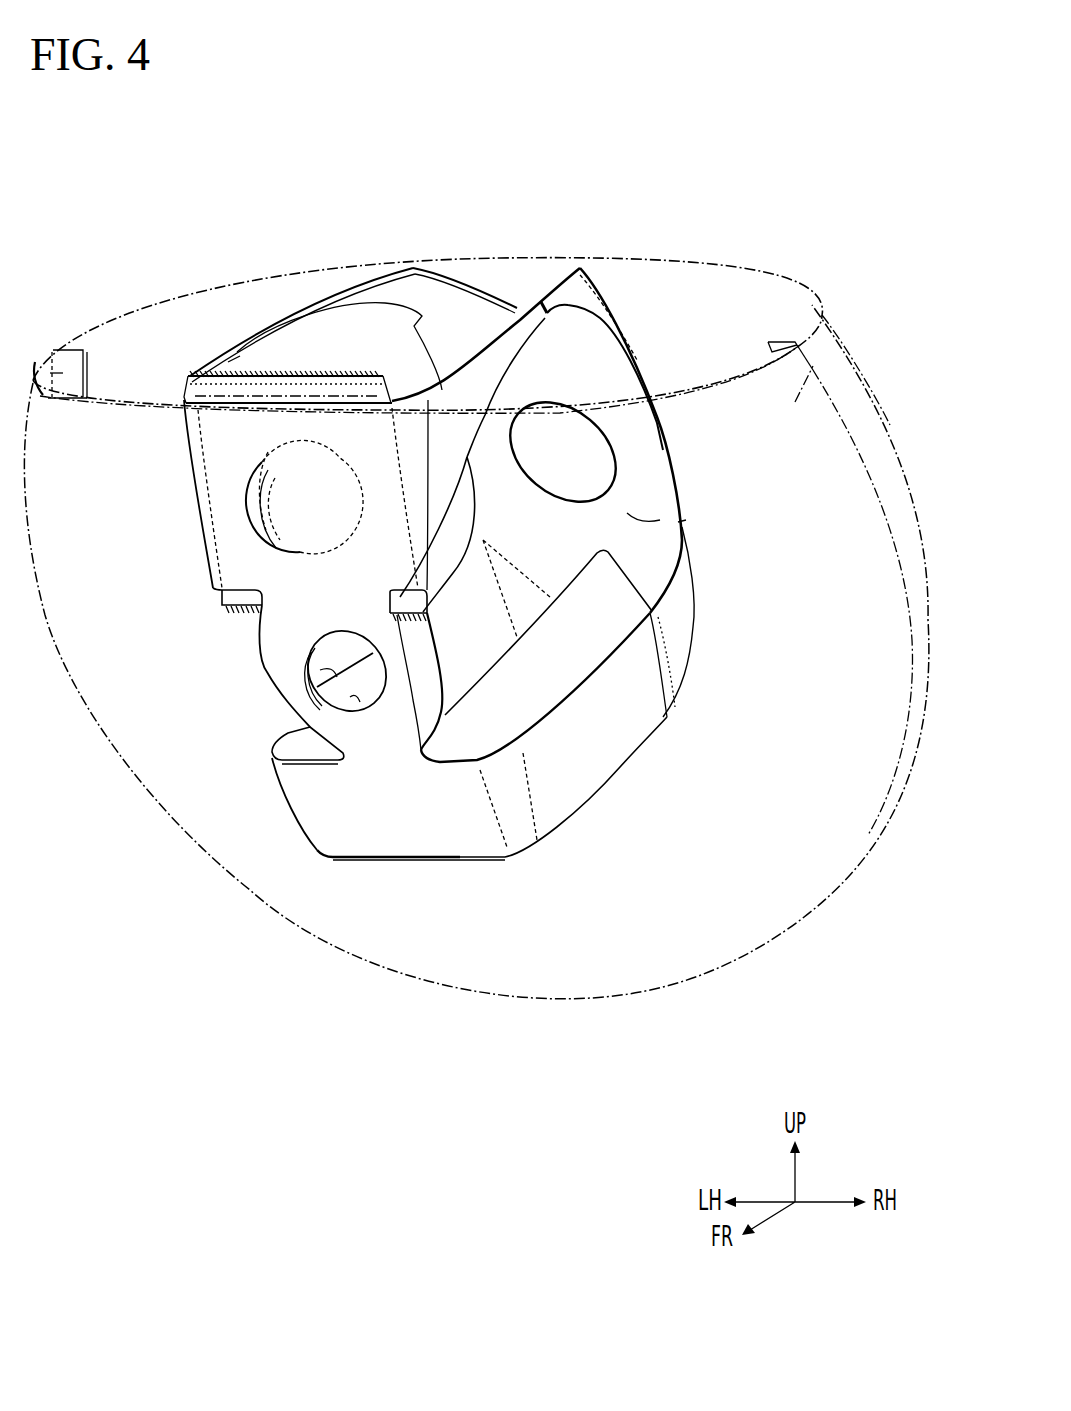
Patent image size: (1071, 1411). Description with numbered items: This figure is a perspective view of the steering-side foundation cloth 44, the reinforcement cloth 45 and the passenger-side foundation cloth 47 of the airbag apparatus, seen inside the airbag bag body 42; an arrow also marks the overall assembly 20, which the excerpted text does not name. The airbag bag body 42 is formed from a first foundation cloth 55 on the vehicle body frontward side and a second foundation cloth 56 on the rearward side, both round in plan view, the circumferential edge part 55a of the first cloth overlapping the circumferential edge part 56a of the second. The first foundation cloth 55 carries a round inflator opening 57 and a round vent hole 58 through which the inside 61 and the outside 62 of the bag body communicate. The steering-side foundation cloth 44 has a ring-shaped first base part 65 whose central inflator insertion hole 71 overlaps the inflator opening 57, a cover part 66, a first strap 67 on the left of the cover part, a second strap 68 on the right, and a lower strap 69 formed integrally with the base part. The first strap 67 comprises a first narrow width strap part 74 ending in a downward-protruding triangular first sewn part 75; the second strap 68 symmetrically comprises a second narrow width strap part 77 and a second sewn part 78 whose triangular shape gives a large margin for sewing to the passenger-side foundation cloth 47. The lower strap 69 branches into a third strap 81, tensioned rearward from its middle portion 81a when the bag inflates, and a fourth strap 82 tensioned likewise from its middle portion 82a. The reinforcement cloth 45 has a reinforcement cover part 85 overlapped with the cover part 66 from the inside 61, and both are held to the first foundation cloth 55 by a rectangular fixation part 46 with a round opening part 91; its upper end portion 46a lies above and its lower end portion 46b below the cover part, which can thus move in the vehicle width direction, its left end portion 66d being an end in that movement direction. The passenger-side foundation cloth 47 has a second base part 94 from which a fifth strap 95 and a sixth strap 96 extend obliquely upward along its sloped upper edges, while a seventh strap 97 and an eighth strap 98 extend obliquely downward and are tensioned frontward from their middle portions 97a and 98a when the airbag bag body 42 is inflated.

The vehicle body 20 is at (680, 243).
The airbag bag body 42 is at (920, 265).
The steering-side foundation cloth 44 is at (252, 668).
The reinforcement cloth 45 is at (238, 350).
The fixation part 46 is at (271, 374).
The upper end portion 46a is at (343, 383).
The lower end portion 46b is at (227, 598).
The passenger-side foundation cloth 47 is at (683, 470).
The first foundation cloth 55 is at (840, 335).
The circumferential edge part 55a is at (34, 366).
The second foundation cloth 56 is at (852, 350).
The circumferential edge part 56a is at (87, 367).
The inflator opening 57 is at (360, 697).
The vent hole 58 is at (267, 540).
The inside 61 is at (674, 331).
The outside 62 is at (53, 855).
The first base part 65 is at (280, 670).
The cover part 66 is at (230, 443).
The left end portion 66d is at (470, 457).
The first strap 67 is at (490, 172).
The second strap 68 is at (278, 172).
The lower strap 69 is at (393, 818).
The inflator insertion hole 71 is at (333, 668).
The first narrow width strap part 74 is at (517, 333).
The first sewn part 75 is at (610, 313).
The second narrow width strap part 77 is at (283, 314).
The second sewn part 78 is at (398, 284).
The third strap 81 is at (607, 755).
The middle portion 81a is at (523, 838).
The fourth strap 82 is at (300, 748).
The middle portion 82a is at (293, 812).
The reinforcement cover part 85 is at (243, 374).
The opening part 91 is at (274, 482).
The second base part 94 is at (627, 513).
The fifth strap 95 is at (563, 300).
The sixth strap 96 is at (303, 310).
The seventh strap 97 is at (683, 667).
The middle portion 97a is at (683, 609).
The eighth strap 98 is at (470, 670).
The middle portion 98a is at (548, 632).